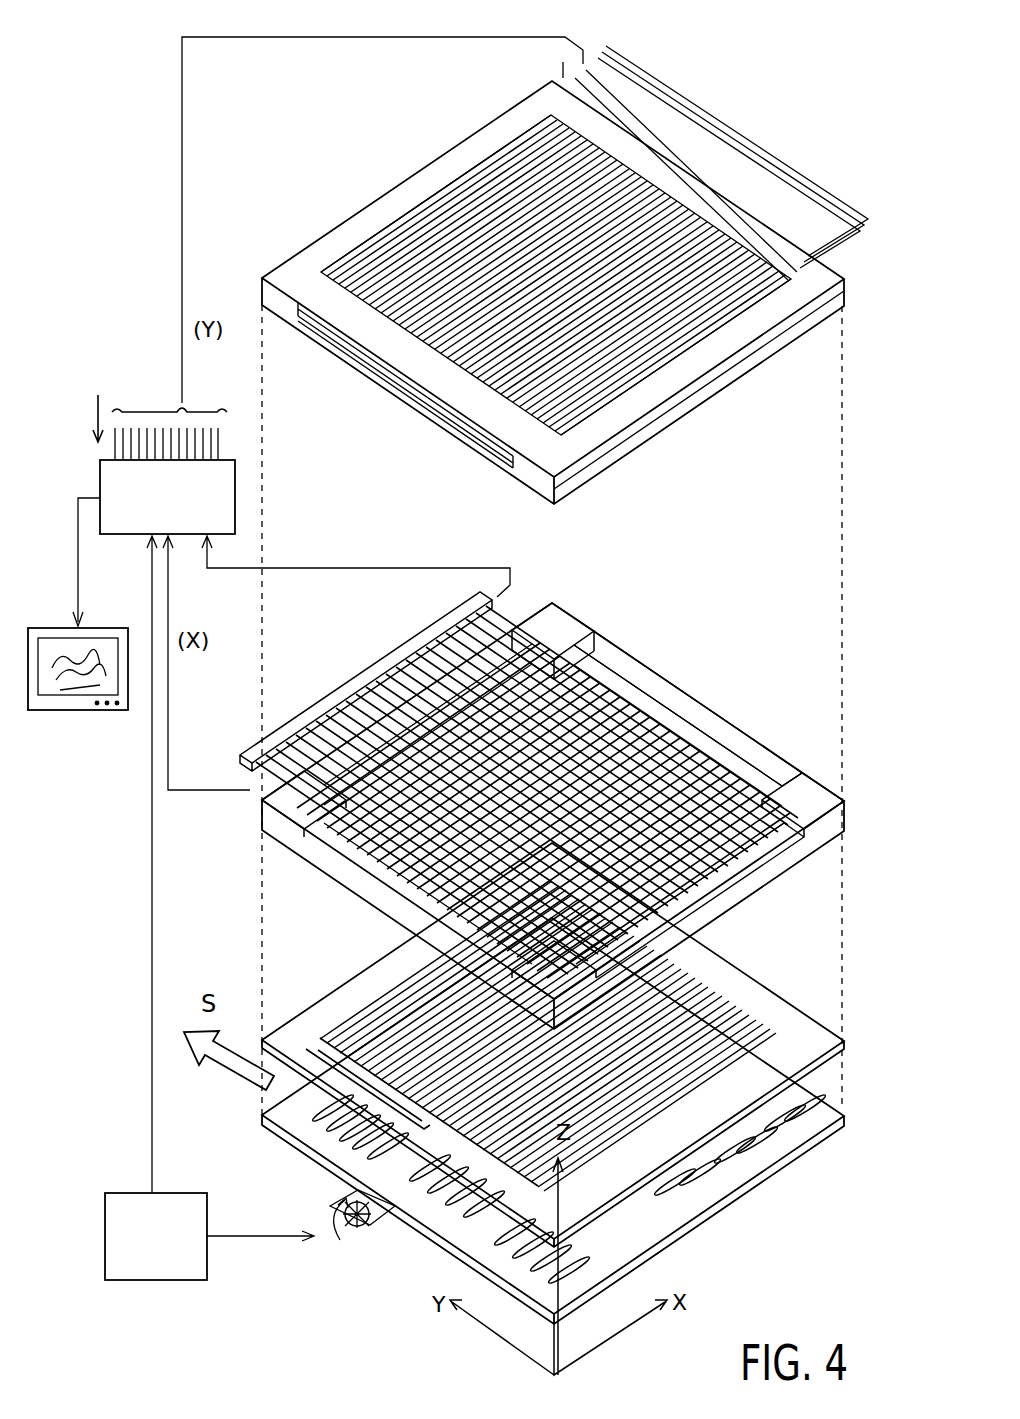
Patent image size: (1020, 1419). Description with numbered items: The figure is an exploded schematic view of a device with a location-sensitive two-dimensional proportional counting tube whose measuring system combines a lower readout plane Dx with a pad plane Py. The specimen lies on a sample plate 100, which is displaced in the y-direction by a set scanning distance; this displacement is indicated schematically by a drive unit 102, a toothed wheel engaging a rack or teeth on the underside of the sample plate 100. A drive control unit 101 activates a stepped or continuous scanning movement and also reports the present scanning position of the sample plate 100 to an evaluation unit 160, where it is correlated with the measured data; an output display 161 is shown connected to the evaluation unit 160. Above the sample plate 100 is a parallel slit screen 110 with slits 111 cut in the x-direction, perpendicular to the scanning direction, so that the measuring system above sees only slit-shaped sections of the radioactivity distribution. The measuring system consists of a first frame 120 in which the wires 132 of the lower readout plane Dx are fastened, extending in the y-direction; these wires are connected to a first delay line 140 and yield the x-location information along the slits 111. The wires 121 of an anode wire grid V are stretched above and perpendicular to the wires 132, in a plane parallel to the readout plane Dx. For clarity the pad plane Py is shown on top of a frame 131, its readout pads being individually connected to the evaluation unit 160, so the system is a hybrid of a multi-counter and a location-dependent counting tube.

The sample plate 100 is at (733, 1180).
The drive control unit 101 is at (160, 1281).
The drive unit 102 is at (348, 1203).
The parallel slit screen 110 is at (742, 980).
The slits 111 is at (412, 1148).
The first frame 120 is at (352, 887).
The wires of anode wire grid 121 is at (700, 686).
The frame 131 is at (697, 398).
The wires of lower readout plane 132 is at (700, 905).
The first delay line 140 is at (350, 666).
The evaluation unit 160 is at (100, 478).
The display monitor 161 is at (50, 697).
The pad plane Py is at (470, 185).
The lower readout plane Dx is at (458, 668).
The anode wire grid V is at (646, 674).